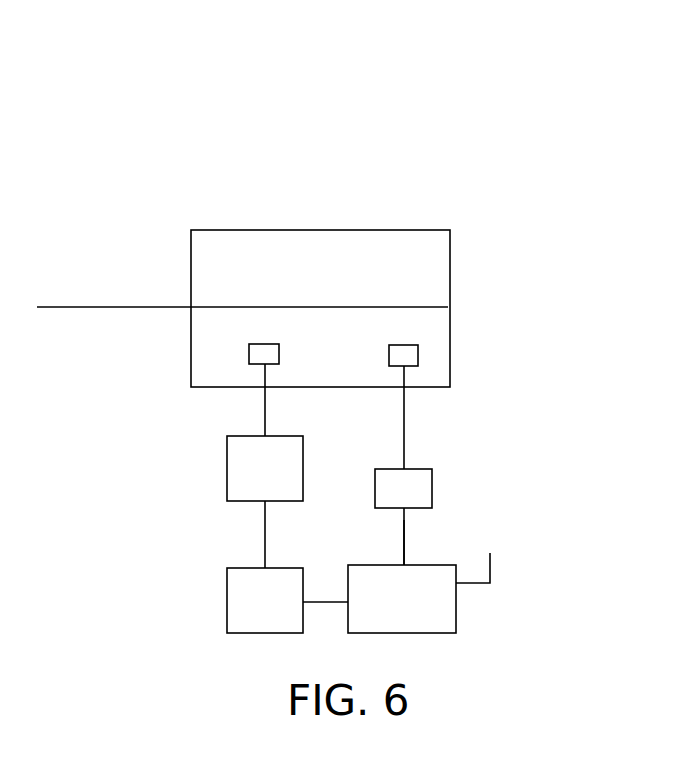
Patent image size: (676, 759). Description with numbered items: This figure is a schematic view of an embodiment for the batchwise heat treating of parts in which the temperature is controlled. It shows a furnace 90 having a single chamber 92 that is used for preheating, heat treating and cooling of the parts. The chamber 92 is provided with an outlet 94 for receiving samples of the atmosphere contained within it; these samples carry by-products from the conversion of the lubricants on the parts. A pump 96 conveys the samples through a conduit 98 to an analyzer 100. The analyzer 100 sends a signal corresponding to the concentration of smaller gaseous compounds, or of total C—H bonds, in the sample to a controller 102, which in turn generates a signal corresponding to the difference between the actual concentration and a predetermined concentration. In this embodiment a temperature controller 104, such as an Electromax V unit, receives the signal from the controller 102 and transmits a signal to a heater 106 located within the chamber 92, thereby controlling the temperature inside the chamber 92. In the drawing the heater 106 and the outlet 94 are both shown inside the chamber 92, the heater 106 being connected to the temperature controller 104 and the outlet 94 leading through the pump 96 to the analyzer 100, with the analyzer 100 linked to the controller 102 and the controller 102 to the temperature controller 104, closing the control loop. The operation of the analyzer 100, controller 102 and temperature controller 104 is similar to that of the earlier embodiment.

The furnace 90 is at (341, 202).
The chamber 92 is at (422, 263).
The outlet 94 is at (418, 355).
The pump 96 is at (385, 499).
The conduit 98 is at (404, 538).
The analyzer 100 is at (377, 615).
The controller 102 is at (240, 615).
The temperature controller 104 is at (240, 482).
The heater 106 is at (280, 355).